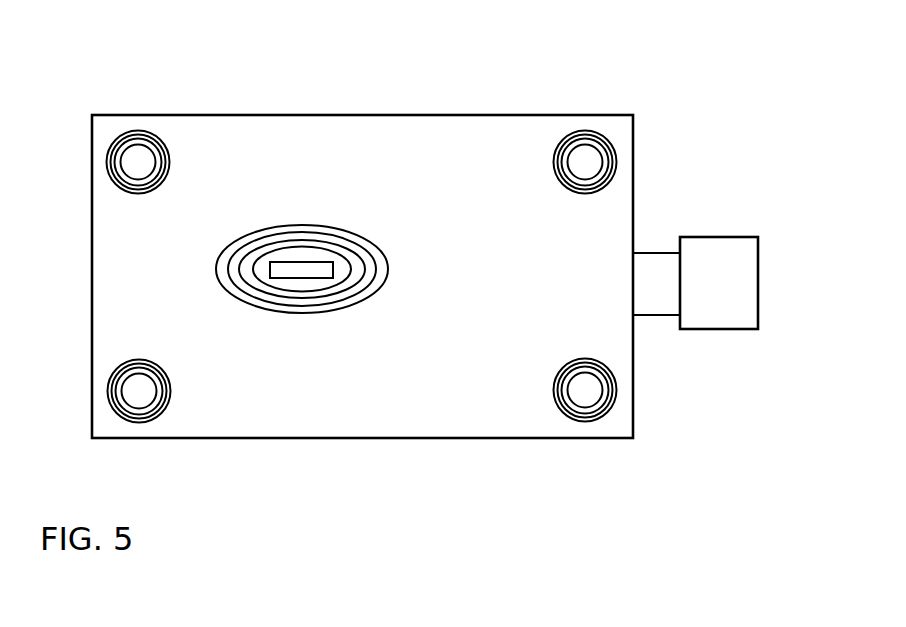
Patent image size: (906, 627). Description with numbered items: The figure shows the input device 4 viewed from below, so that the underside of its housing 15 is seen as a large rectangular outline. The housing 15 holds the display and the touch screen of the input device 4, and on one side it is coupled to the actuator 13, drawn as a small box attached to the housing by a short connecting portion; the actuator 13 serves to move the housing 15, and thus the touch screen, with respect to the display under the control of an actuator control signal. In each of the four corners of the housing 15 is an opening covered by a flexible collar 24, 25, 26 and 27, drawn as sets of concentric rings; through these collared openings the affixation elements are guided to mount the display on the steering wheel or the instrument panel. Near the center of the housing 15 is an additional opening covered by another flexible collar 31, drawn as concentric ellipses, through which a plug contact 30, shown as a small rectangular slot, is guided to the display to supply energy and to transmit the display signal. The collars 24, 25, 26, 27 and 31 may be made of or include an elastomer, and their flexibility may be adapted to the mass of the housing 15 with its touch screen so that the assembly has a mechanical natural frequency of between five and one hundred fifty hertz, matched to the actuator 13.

The input device 4 is at (683, 82).
The actuator 13 is at (725, 269).
The housing 15 is at (490, 180).
The flexible collar 24 is at (571, 152).
The flexible collar 25 is at (609, 388).
The flexible collar 26 is at (138, 138).
The flexible collar 27 is at (125, 407).
The plug contact 30 is at (287, 268).
The flexible collar 31 is at (332, 232).